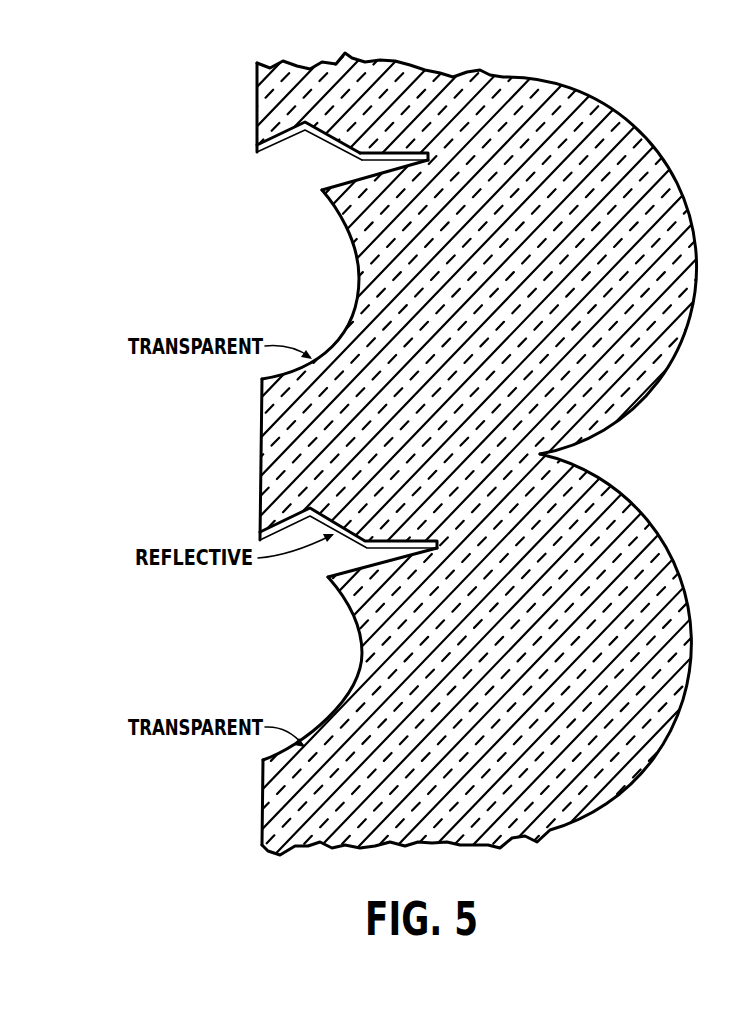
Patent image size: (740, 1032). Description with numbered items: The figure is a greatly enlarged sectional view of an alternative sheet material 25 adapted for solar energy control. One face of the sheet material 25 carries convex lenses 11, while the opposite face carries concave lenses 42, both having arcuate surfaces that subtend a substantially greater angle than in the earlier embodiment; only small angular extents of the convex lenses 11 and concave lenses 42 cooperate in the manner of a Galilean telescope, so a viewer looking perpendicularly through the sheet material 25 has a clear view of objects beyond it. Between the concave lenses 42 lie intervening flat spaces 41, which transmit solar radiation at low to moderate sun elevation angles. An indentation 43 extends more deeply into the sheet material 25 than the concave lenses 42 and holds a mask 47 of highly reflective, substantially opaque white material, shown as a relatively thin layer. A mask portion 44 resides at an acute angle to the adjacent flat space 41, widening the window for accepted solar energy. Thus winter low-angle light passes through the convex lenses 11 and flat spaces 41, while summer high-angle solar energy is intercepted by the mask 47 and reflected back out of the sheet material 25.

The convex lenses 11 is at (623, 117).
The sheet material 25 is at (606, 472).
The flat spaces 41 is at (258, 397).
The concave lenses 42 is at (353, 292).
The indentation 43 is at (330, 183).
The mask portion 44 is at (278, 133).
The mask 47 is at (417, 153).